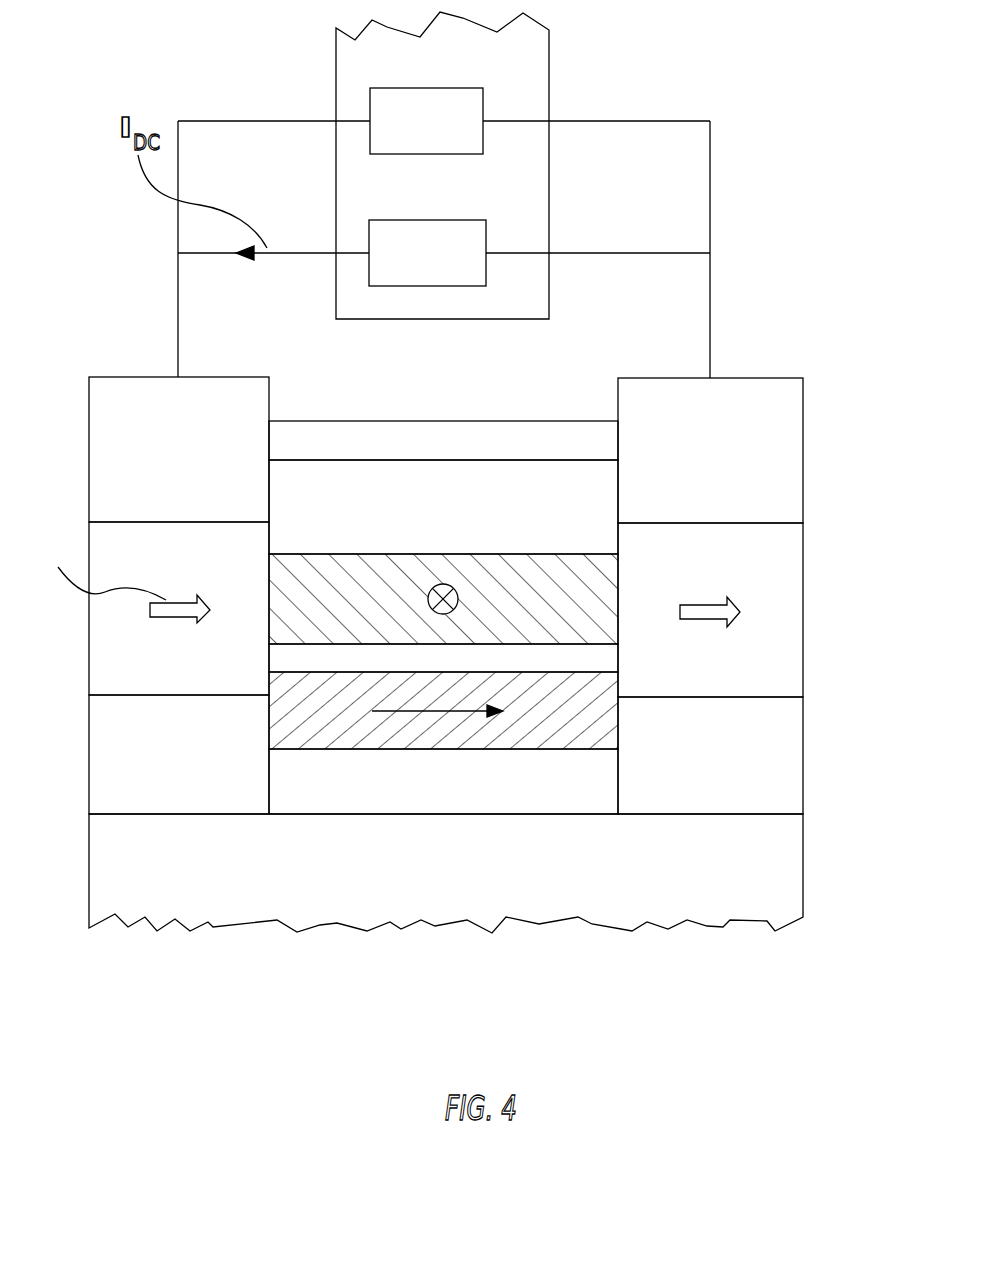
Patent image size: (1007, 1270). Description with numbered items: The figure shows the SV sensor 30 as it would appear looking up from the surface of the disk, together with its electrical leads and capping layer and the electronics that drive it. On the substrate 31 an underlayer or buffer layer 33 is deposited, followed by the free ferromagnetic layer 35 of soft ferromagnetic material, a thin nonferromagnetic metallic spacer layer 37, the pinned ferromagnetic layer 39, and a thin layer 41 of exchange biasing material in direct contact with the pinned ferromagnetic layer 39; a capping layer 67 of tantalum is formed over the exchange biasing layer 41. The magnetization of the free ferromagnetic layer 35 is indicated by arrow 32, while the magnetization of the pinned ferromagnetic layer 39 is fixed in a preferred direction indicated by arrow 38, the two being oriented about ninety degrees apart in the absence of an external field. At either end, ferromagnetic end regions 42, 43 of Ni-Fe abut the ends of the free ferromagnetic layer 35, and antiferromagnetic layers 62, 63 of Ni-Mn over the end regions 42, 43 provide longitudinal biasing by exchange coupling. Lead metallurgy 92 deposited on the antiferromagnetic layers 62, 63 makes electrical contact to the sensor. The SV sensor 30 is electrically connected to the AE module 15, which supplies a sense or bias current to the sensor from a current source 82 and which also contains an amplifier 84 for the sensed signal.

The AE module 15 is at (549, 30).
The amplifier 84 is at (483, 102).
The current source 82 is at (486, 228).
The SV sensor 30 is at (158, 358).
The lead metallurgy 92 is at (149, 433).
The capping layer 67 is at (565, 437).
The exchange biasing layer 41 is at (565, 510).
The pinned ferromagnetic layer 39 is at (569, 586).
The antiferromagnetic layer 63 is at (757, 617).
The nonferromagnetic metallic spacer layer 37 is at (571, 663).
The free ferromagnetic layer 35 is at (573, 732).
The ferromagnetic end region 43 is at (762, 763).
The underlayer 33 is at (575, 803).
The substrate 31 is at (765, 875).
The antiferromagnetic layer 62 is at (149, 653).
The ferromagnetic end region 42 is at (152, 755).
The arrow 38 is at (431, 611).
The arrow 32 is at (463, 715).